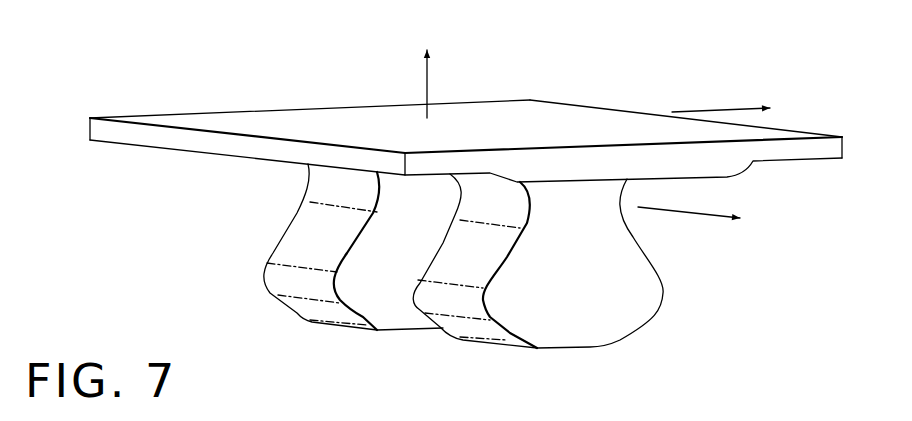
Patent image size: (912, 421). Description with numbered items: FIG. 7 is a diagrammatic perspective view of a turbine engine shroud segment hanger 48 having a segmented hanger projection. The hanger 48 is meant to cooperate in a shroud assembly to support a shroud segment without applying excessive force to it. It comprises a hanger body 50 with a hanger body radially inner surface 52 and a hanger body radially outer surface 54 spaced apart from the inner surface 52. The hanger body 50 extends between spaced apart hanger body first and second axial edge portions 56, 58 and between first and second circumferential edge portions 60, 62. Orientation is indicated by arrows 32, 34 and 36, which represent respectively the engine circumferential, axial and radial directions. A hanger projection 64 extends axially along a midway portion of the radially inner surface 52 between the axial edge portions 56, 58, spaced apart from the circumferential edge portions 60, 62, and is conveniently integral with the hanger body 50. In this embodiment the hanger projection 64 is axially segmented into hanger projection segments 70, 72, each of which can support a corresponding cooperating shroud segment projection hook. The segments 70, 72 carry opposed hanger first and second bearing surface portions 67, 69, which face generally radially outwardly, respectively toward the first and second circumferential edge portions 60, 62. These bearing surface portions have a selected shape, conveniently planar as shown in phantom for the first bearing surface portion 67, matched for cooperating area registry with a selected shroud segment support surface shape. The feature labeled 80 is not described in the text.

The shroud segment hanger 48 is at (168, 83).
The hanger body 50 is at (776, 182).
The hanger body radially inner surface 52 is at (152, 147).
The hanger body radially outer surface 54 is at (379, 137).
The hanger body first axial edge portion 56 is at (243, 111).
The hanger body second axial edge portion 58 is at (599, 179).
The hanger body first circumferential edge portion 60 is at (253, 147).
The hanger body second circumferential edge portion 62 is at (573, 105).
The hanger projection 64 is at (248, 247).
The engine circumferential direction arrow 32 is at (706, 110).
The engine axial direction arrow 34 is at (683, 213).
The engine radial direction arrow 36 is at (427, 93).
The hanger first bearing surface portion 67 is at (337, 247).
The hanger second bearing surface portion 69 is at (650, 255).
The hanger projection segment 70 is at (315, 331).
The hanger projection segment 72 is at (468, 348).
The foot 80 is at (396, 344).